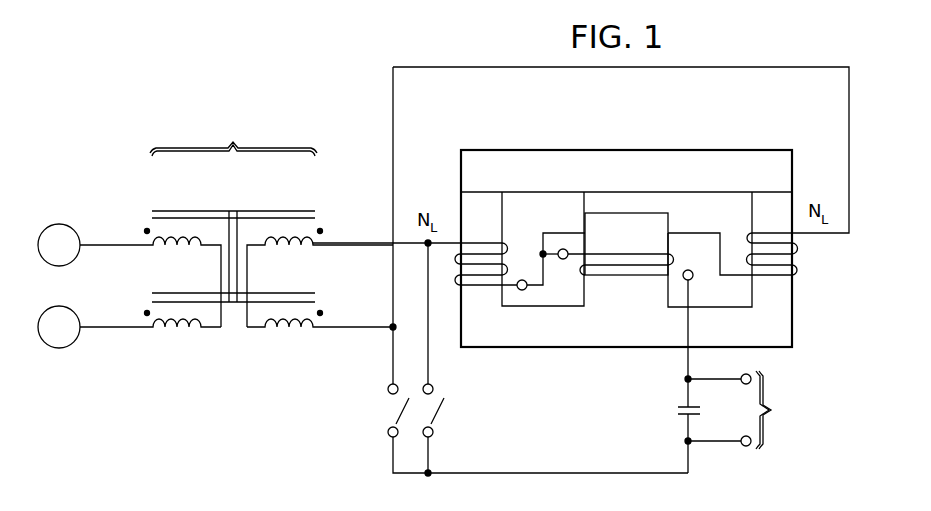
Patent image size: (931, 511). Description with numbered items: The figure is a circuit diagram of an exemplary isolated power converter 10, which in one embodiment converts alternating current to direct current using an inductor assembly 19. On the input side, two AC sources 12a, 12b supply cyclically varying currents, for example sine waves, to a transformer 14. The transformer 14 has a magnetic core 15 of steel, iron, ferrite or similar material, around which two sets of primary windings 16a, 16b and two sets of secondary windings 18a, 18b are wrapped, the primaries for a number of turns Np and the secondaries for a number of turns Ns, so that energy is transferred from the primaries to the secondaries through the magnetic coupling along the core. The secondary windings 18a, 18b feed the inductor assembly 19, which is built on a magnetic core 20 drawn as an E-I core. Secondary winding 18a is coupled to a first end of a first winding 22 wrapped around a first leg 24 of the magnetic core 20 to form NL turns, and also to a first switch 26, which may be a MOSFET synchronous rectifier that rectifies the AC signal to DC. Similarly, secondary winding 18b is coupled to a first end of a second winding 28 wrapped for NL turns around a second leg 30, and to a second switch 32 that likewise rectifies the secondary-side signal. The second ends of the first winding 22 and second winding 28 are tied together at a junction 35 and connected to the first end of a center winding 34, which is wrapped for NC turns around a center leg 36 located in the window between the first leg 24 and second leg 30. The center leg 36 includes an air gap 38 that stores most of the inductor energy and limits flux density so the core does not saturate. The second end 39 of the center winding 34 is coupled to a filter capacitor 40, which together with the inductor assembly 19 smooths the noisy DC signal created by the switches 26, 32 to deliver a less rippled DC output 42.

The isolated power converter 10 is at (273, 57).
The AC source 12a is at (57, 223).
The AC source 12b is at (59, 348).
The transformer 14 is at (233, 209).
The magnetic core 15 is at (210, 210).
The primary winding 16a is at (150, 241).
The primary winding 16b is at (150, 323).
The secondary winding 18a is at (323, 237).
The secondary winding 18b is at (323, 320).
The inductor assembly 19 is at (712, 137).
The magnetic core 20 is at (773, 157).
The first winding 22 is at (513, 250).
The first leg 24 is at (480, 203).
The first switch 26 is at (437, 418).
The second winding 28 is at (803, 270).
The second leg 30 is at (783, 302).
The second switch 32 is at (397, 420).
The center winding 34 is at (595, 277).
The junction of first and second windings 35 is at (546, 258).
The center leg 36 is at (610, 218).
The air gap 38 is at (638, 205).
The second end of center winding 39 is at (692, 278).
The filter capacitor 40 is at (678, 408).
The DC output 42 is at (744, 414).